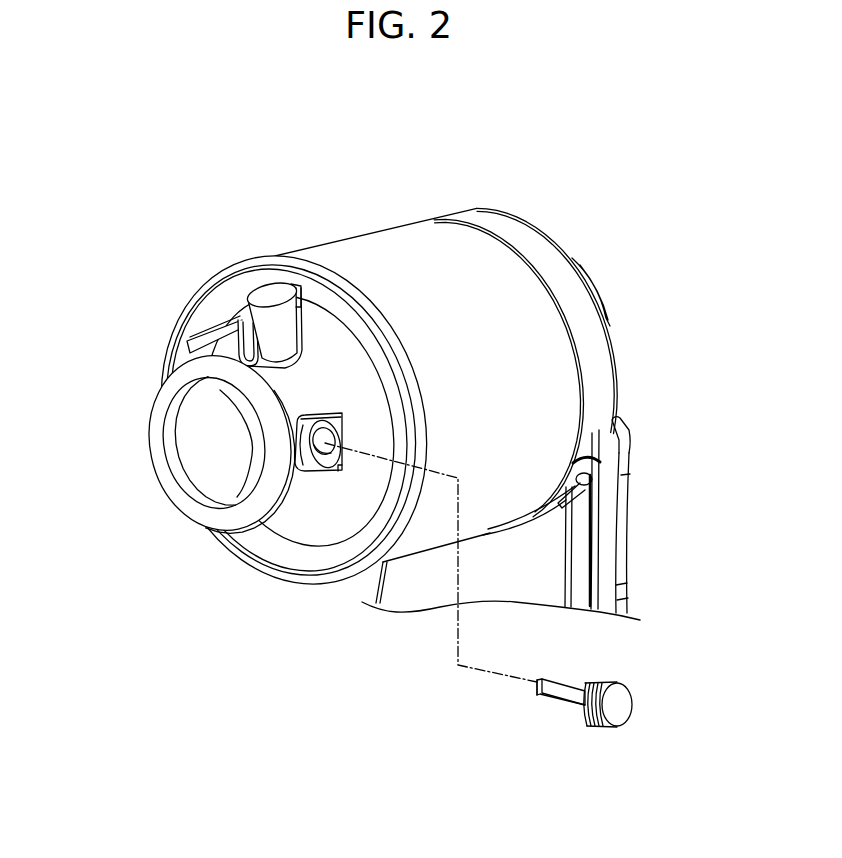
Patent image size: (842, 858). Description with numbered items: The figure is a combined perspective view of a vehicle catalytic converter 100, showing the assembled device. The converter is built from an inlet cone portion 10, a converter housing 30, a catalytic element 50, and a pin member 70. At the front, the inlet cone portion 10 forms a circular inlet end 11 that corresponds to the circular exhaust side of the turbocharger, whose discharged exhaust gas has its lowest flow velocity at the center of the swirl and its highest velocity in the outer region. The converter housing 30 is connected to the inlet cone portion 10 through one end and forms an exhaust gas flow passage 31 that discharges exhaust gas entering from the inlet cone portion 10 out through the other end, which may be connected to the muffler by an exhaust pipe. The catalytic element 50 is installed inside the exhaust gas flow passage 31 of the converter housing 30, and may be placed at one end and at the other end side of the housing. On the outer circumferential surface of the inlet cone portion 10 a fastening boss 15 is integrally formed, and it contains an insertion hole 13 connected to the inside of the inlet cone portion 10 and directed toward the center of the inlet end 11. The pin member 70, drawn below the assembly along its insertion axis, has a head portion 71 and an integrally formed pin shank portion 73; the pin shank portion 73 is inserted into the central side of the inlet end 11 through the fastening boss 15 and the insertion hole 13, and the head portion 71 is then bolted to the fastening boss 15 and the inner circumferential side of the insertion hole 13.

The vehicle catalytic converter 100 is at (373, 153).
The inlet cone portion 10 is at (354, 427).
The inlet end 11 is at (199, 442).
The insertion hole 13 is at (330, 470).
The fastening boss 15 is at (304, 529).
The converter housing 30 is at (533, 439).
The exhaust gas flow passage 31 is at (558, 563).
The catalytic element 50 is at (235, 433).
The pin member 70 is at (590, 739).
The head portion 71 is at (622, 710).
The pin shank portion 73 is at (555, 692).